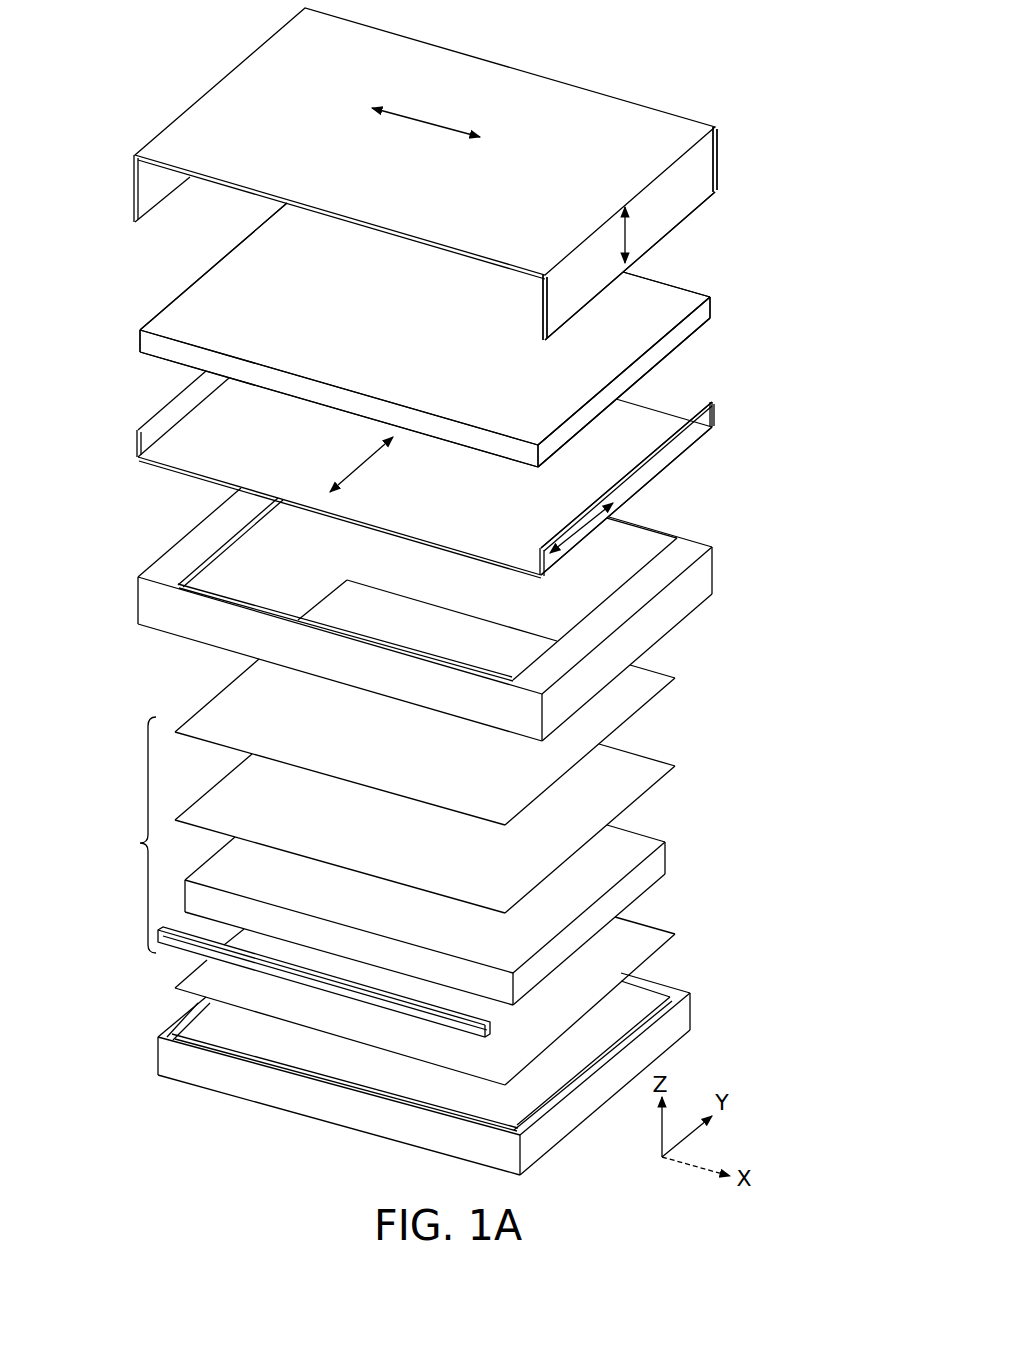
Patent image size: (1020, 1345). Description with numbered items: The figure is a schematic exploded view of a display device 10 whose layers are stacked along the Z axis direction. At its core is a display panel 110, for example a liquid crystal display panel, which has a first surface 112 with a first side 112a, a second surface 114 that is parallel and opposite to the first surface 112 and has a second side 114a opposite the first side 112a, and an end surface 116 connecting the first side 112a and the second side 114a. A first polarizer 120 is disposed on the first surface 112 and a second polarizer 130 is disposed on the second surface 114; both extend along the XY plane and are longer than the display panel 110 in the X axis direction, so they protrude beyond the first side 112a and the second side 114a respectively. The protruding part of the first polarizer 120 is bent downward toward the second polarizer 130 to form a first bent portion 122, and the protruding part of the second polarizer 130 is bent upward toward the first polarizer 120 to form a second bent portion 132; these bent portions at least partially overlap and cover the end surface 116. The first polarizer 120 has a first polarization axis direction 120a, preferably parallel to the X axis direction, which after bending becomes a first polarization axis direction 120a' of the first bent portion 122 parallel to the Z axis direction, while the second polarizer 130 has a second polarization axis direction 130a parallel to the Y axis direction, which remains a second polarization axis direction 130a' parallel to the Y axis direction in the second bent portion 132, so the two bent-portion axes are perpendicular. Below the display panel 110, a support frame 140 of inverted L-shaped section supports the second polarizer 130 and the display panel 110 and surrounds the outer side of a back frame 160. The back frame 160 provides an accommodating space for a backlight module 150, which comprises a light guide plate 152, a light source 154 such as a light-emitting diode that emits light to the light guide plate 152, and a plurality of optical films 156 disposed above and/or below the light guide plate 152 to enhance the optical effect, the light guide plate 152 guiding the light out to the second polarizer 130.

The display device 10 is at (172, 38).
The display panel 110 is at (124, 337).
The first surface 112 is at (680, 307).
The first side 112a is at (641, 352).
The second surface 114 is at (682, 343).
The second side 114a is at (663, 358).
The end surface 116 is at (698, 318).
The first polarizer 120 is at (652, 127).
The first polarization axis direction 120a is at (426, 114).
The first polarization axis direction of the first bent portion 120a' is at (710, 225).
The first bent portion 122 is at (708, 153).
The second polarizer 130 is at (642, 438).
The second polarization axis direction 130a is at (355, 462).
The second polarization axis direction of the second bent portion 130a' is at (672, 535).
The second bent portion 132 is at (700, 425).
The support frame 140 is at (700, 572).
The backlight module 150 is at (125, 835).
The light guide plate 152 is at (660, 865).
The light source 154 is at (285, 977).
The optical films 156 is at (648, 777).
The back frame 160 is at (680, 1017).